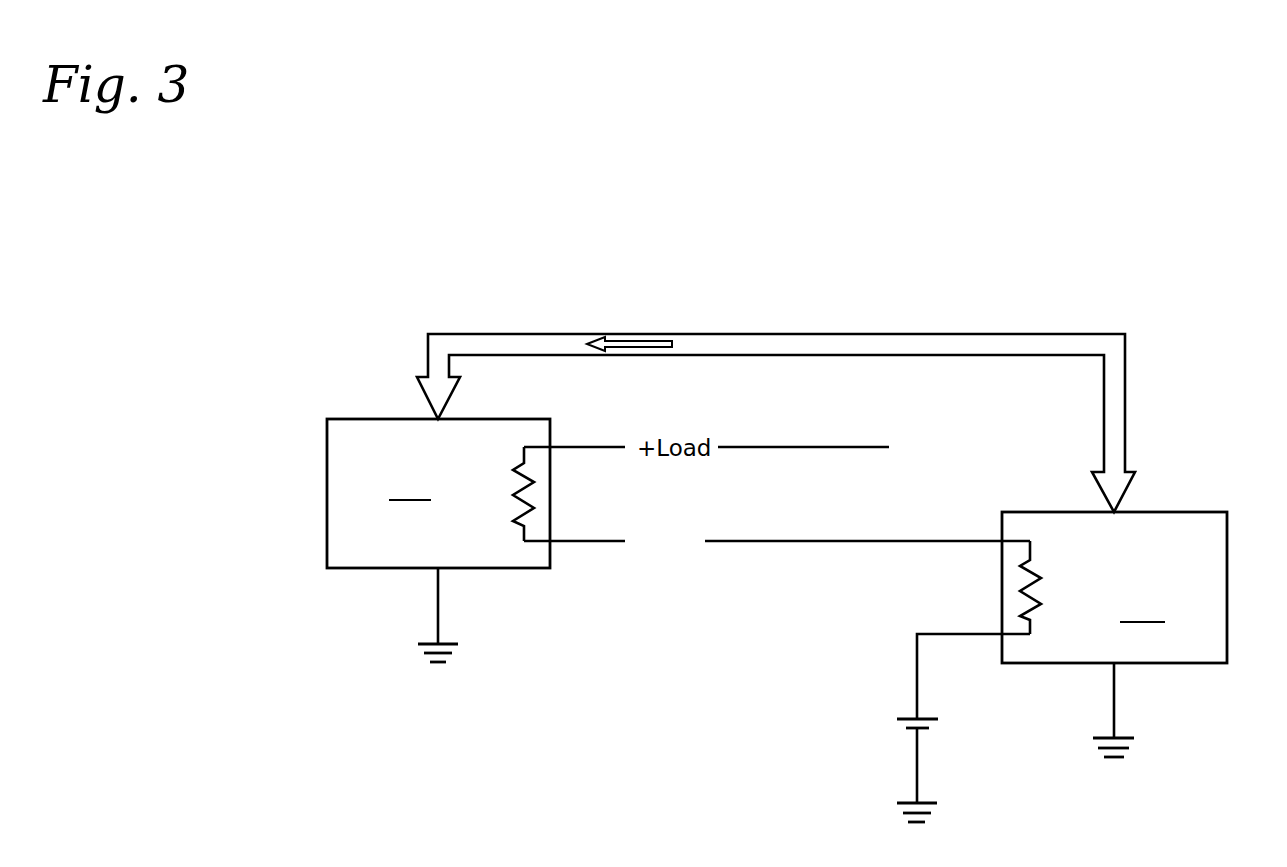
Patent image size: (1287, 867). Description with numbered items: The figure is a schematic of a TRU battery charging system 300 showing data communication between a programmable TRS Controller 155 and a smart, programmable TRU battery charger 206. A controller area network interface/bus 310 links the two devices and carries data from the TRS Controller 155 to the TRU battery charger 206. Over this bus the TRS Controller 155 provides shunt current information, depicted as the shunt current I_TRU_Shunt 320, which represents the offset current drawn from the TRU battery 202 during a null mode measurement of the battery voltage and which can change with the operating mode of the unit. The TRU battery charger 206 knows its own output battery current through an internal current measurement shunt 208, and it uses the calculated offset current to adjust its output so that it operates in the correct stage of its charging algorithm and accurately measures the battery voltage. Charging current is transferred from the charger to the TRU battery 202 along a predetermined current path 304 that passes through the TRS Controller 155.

The TRU battery charging system 300 is at (1028, 240).
The CAN interface/bus 310 is at (795, 333).
The shunt current I_TRU_Shunt 320 is at (620, 340).
The TRU battery charger 206 is at (438, 540).
The internal current measurement shunt 208 is at (513, 470).
The predetermined current path 304 is at (762, 540).
The TRS Controller 155 is at (1114, 634).
The TRU battery 202 is at (905, 717).